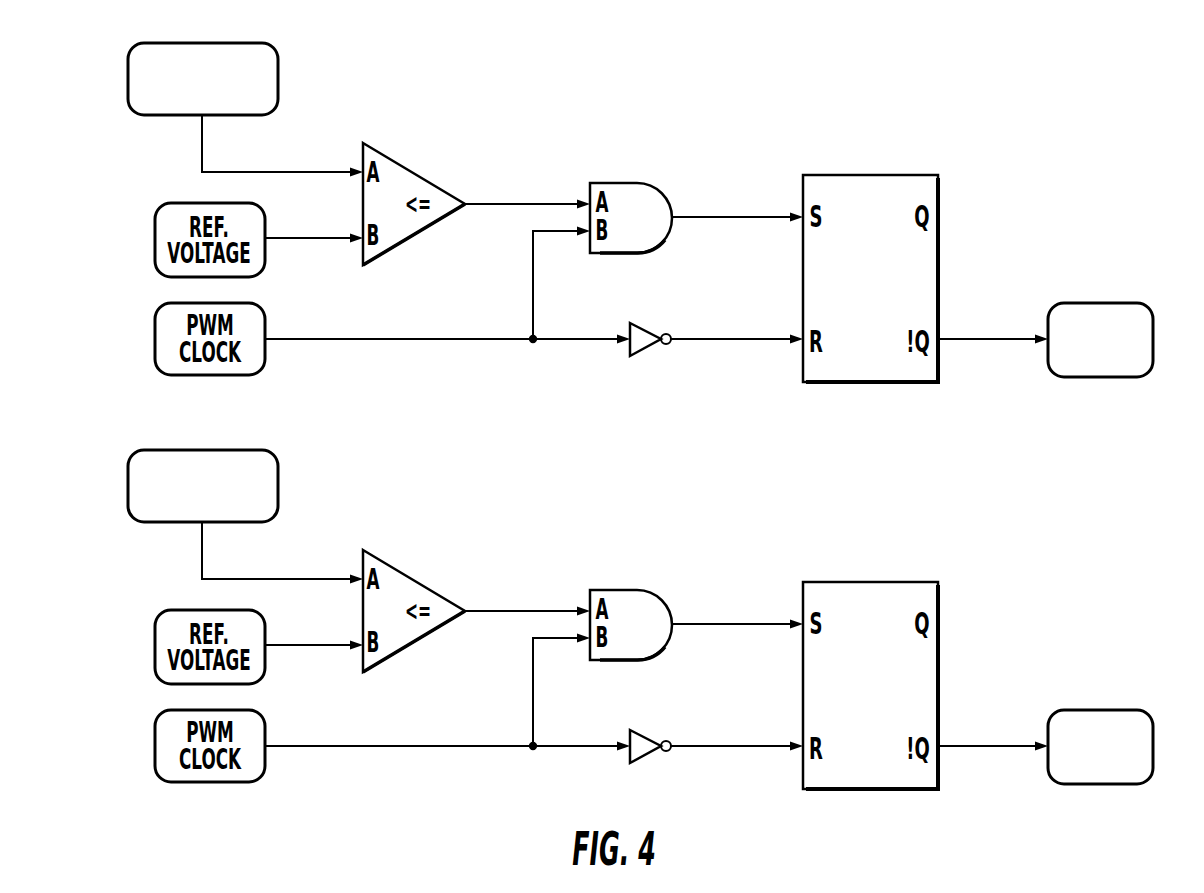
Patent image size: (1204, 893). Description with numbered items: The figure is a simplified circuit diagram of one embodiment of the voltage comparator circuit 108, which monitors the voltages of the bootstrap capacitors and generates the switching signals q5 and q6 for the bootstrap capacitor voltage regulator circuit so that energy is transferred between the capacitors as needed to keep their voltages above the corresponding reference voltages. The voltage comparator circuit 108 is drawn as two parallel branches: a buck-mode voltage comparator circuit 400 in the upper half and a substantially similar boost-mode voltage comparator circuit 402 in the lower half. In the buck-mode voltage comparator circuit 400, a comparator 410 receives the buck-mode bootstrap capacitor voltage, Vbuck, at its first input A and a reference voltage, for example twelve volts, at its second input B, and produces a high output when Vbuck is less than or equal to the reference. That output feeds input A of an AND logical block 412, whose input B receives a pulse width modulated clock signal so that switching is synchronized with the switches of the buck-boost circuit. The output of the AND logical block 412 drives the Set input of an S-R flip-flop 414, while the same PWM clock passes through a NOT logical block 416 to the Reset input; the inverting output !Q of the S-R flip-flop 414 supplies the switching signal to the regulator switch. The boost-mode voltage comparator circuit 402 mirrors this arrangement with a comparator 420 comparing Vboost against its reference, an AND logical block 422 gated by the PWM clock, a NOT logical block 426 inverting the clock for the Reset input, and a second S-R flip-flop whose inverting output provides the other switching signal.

The voltage comparator circuit 108 is at (1110, 66).
The buck-mode voltage comparator circuit 400 is at (733, 126).
The boost-mode voltage comparator circuit 402 is at (640, 617).
The comparator 410 is at (417, 172).
The AND logical block 412 is at (618, 183).
The S-R flip-flop 414 is at (870, 463).
The NOT logical block 416 is at (643, 327).
The comparator 420 is at (420, 610).
The AND logical block 422 is at (635, 607).
The NOT logical block 426 is at (667, 730).